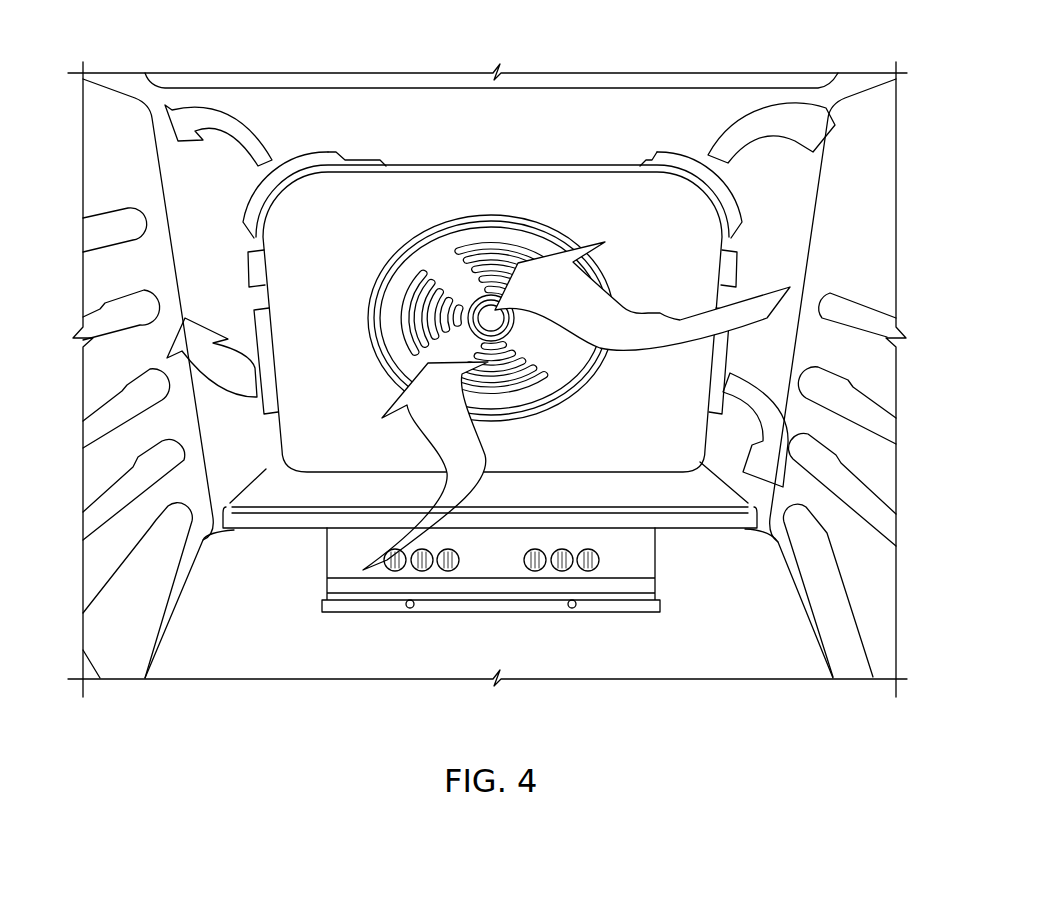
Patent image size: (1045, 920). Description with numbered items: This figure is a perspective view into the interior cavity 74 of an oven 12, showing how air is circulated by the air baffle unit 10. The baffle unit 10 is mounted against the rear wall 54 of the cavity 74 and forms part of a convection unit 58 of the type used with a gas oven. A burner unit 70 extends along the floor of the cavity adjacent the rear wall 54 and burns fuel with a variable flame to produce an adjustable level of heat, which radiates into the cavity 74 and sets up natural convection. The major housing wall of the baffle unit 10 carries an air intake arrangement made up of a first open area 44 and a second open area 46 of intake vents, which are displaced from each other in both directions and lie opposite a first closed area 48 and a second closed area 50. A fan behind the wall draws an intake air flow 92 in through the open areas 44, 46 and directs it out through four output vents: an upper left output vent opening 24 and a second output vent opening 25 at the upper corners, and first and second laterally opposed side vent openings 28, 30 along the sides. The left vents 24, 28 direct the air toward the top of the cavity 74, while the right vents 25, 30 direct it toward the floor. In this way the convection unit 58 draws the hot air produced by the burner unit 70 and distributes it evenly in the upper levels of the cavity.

The air baffle unit 10 is at (655, 210).
The oven 12 is at (783, 48).
The upper left output vent opening 24 is at (292, 155).
The second output vent opening 25 is at (727, 183).
The first side vent opening 28 is at (250, 325).
The second side vent opening 30 is at (730, 345).
The first open area 44 is at (523, 245).
The second open area 46 is at (405, 353).
The first closed area 48 is at (444, 293).
The second closed area 50 is at (541, 376).
The rear wall 54 is at (374, 136).
The convection unit 58 is at (265, 470).
The burner unit 70 is at (640, 560).
The interior cavity 74 is at (140, 128).
The intake air flow 92 is at (580, 316).